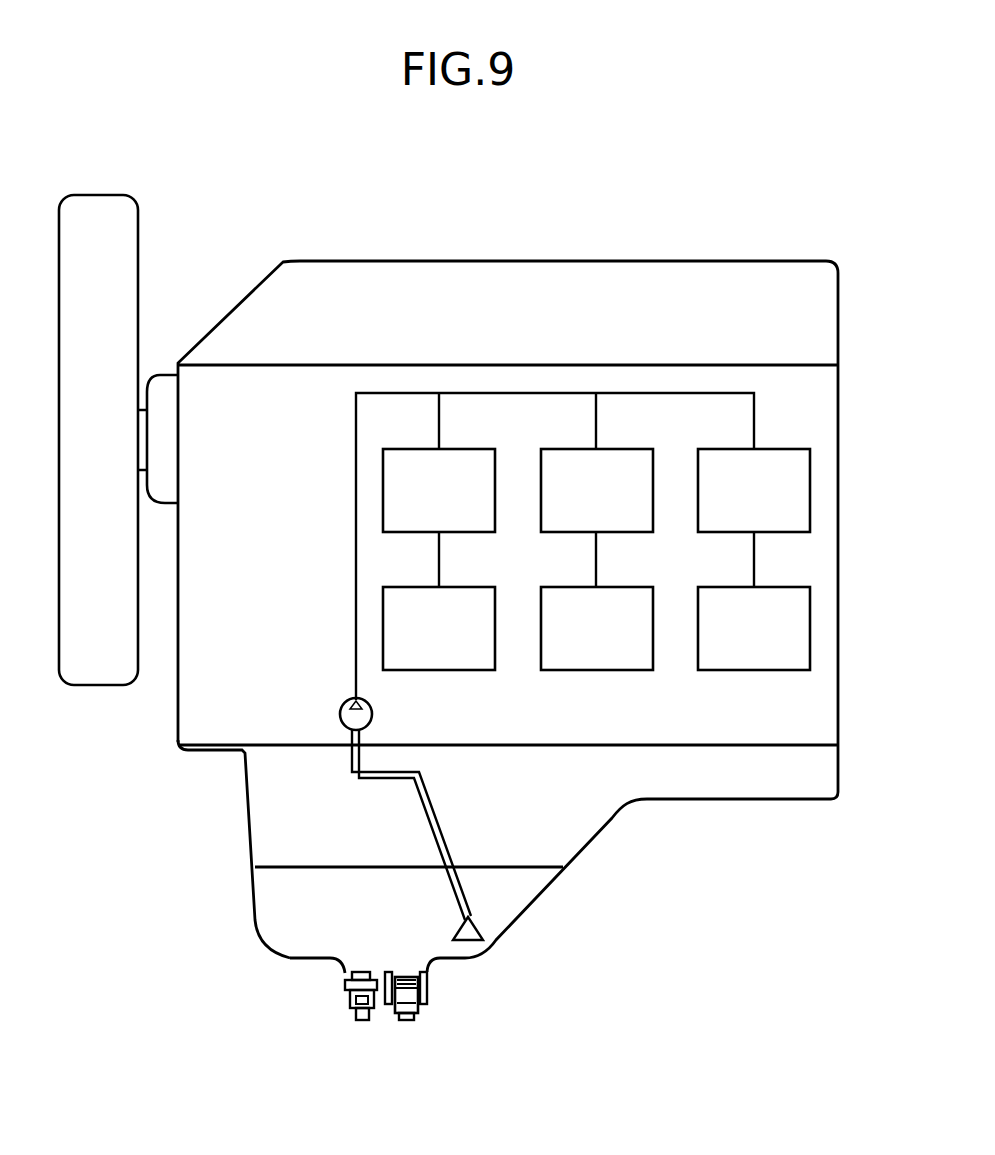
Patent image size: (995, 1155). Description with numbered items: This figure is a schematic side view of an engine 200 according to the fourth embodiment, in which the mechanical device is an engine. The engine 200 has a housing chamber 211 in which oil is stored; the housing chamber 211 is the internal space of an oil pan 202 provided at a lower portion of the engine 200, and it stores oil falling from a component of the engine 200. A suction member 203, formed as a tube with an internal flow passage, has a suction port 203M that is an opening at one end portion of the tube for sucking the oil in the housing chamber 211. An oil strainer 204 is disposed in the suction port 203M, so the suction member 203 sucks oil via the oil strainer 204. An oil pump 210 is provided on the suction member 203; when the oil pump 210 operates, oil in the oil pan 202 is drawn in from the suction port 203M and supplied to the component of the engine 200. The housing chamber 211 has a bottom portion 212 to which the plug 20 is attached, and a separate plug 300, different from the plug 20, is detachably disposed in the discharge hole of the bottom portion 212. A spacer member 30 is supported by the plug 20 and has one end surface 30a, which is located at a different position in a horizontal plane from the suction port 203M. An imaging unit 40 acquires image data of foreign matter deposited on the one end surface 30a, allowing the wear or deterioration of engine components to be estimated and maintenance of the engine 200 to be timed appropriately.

The engine 200 is at (791, 189).
The oil pan 202 is at (249, 928).
The bottom portion 212 is at (297, 960).
The housing chamber 211 is at (523, 858).
The oil pump 210 is at (340, 713).
The suction member 203 is at (430, 797).
The suction port 203M is at (481, 923).
The oil strainer 204 is at (468, 930).
The plug 300 is at (366, 1032).
The plug 20 is at (414, 1033).
The spacer member 30 is at (409, 985).
The one end surface 30a is at (407, 982).
The imaging unit 40 is at (410, 1005).